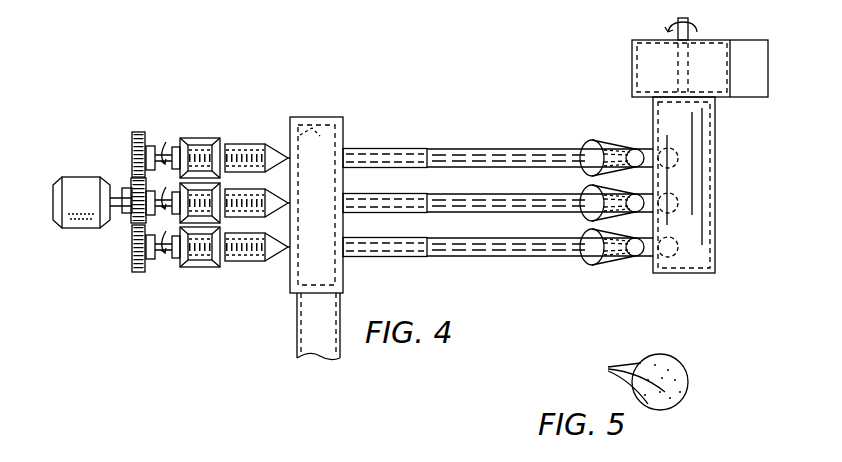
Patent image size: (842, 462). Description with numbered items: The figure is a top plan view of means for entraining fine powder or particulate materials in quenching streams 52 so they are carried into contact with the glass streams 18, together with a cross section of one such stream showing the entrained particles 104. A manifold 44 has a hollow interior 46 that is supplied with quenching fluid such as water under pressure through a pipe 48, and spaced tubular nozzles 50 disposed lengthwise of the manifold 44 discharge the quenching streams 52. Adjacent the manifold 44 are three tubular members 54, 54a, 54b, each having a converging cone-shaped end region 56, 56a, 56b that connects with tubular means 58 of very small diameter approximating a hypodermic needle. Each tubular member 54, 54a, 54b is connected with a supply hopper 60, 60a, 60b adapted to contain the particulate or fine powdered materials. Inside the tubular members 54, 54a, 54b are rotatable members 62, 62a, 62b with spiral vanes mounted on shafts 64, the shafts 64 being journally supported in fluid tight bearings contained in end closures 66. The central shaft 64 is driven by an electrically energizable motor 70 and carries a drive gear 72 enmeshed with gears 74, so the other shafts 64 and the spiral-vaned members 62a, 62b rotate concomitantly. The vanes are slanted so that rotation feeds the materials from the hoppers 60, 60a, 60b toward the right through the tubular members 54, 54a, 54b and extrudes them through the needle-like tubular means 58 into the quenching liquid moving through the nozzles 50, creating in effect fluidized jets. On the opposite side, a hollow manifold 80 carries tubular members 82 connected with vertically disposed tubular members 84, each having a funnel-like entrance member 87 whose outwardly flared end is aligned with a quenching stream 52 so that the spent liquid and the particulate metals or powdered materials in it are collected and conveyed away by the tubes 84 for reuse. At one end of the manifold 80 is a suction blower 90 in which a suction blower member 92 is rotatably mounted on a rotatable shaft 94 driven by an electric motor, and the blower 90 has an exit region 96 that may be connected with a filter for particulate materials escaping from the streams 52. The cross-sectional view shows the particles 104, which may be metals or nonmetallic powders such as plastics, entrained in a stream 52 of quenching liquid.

In FIG. 4, the glass streams 18 is at (567, 155).
In FIG. 4, the manifold 44 is at (343, 114).
In FIG. 4, the hollow interior 46 is at (325, 178).
In FIG. 4, the pipe 48 is at (340, 312).
In FIG. 4, the tubular nozzles 50 is at (380, 222).
In FIG. 4, the quenching streams 52 is at (436, 194).
In FIG. 5, the quenching streams 52 is at (680, 361).
In FIG. 4, the tubular member 54 is at (230, 266).
In FIG. 4, the tubular member 54a is at (243, 268).
In FIG. 4, the tubular member 54b is at (275, 155).
In FIG. 4, the cone-shaped end region 56 is at (291, 126).
In FIG. 4, the cone-shaped end region 56a is at (252, 266).
In FIG. 4, the cone-shaped end region 56b is at (298, 140).
In FIG. 4, the tubular means 58 is at (355, 205).
In FIG. 4, the supply hopper 60 is at (258, 144).
In FIG. 4, the supply hopper 60a is at (195, 268).
In FIG. 4, the supply hopper 60b is at (200, 137).
In FIG. 4, the rotatable member 62 is at (240, 216).
In FIG. 4, the rotatable member 62a is at (236, 266).
In FIG. 4, the rotatable member 62b is at (250, 148).
In FIG. 4, the shaft 64 is at (147, 157).
In FIG. 4, the end closure 66 is at (168, 146).
In FIG. 4, the motor 70 is at (81, 202).
In FIG. 4, the drive gear 72 is at (119, 206).
In FIG. 4, the gears 74 is at (136, 131).
In FIG. 4, the manifold 80 is at (716, 162).
In FIG. 4, the tubular members 82 is at (646, 149).
In FIG. 4, the vertical tubular members 84 is at (620, 147).
In FIG. 4, the funnel-like entrance member 87 is at (586, 141).
In FIG. 4, the suction blower 90 is at (632, 42).
In FIG. 4, the suction blower member 92 is at (637, 72).
In FIG. 4, the rotatable shaft 94 is at (690, 26).
In FIG. 4, the exit region 96 is at (768, 58).
In FIG. 5, the particles 104 is at (626, 383).